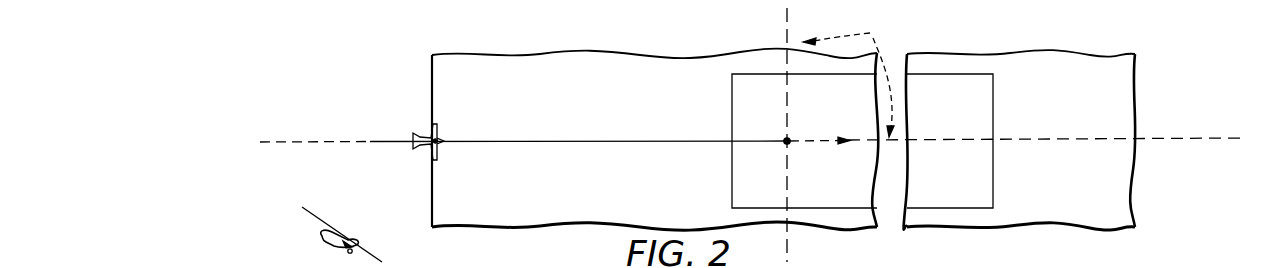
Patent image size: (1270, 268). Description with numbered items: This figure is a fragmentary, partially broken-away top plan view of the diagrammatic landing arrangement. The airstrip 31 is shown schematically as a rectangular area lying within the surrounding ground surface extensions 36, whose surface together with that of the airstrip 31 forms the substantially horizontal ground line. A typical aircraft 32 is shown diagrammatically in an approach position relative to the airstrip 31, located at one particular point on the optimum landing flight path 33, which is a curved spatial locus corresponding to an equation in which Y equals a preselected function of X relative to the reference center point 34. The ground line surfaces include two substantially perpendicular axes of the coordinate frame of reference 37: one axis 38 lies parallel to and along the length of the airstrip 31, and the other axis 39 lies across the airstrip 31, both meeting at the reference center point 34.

The airstrip 31 is at (843, 111).
The aircraft 32 is at (438, 147).
The optimum landing flight path 33 is at (398, 141).
The reference center point 34 is at (786, 143).
The ground surface extensions 36 is at (622, 111).
The coordinate frame of reference 37 is at (852, 76).
The axis along the length of the airstrip 38 is at (334, 141).
The axis across the airstrip 39 is at (786, 22).